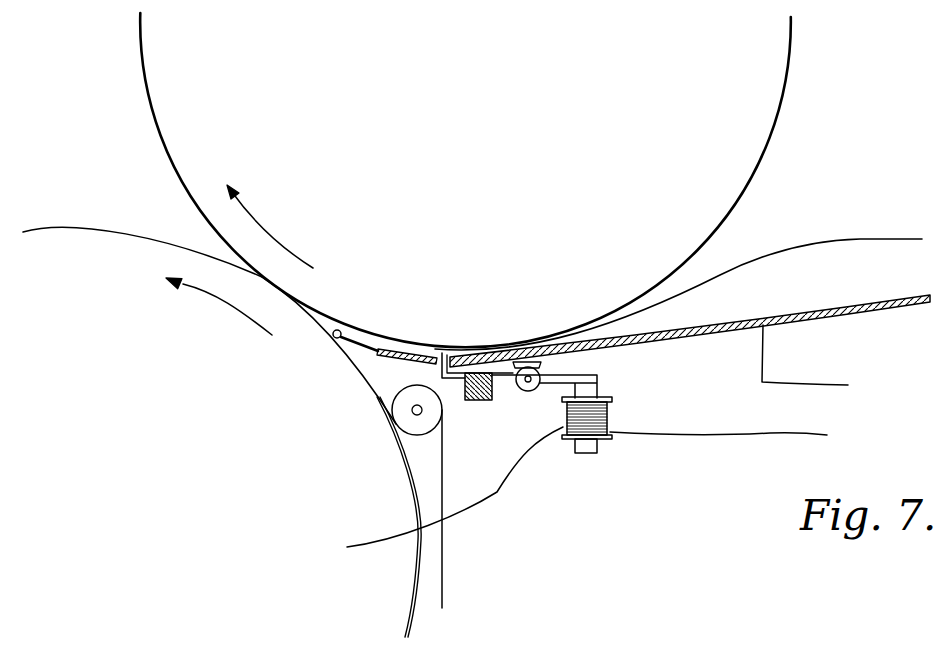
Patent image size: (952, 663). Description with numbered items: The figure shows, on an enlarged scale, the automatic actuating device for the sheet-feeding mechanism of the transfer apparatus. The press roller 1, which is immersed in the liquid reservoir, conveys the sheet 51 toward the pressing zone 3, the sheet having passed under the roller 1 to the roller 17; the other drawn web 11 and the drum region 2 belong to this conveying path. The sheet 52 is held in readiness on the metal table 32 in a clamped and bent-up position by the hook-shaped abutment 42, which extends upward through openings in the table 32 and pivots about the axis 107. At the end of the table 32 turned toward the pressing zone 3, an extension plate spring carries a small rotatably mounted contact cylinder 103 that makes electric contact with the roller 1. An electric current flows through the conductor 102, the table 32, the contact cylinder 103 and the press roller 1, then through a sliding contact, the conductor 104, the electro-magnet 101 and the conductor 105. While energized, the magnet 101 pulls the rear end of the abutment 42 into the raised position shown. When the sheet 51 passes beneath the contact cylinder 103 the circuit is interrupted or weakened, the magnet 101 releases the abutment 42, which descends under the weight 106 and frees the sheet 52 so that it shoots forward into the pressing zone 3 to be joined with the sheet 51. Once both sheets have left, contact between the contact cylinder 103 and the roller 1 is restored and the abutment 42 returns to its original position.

The press roller 1 is at (104, 233).
The drum 2 is at (198, 205).
The pressing zone 3 is at (273, 283).
The web 11 is at (443, 490).
The roller 17 is at (397, 410).
The table 32 is at (420, 355).
The abutment 42 is at (447, 355).
The sheet 51 is at (417, 590).
The sheet 52 is at (716, 277).
The electro-magnet 101 is at (612, 417).
The conductor 102 is at (777, 384).
The contact cylinder 103 is at (332, 334).
The conductor 104 is at (502, 489).
The conductor 105 is at (731, 431).
The weight 106 is at (491, 401).
The axis 107 is at (538, 389).